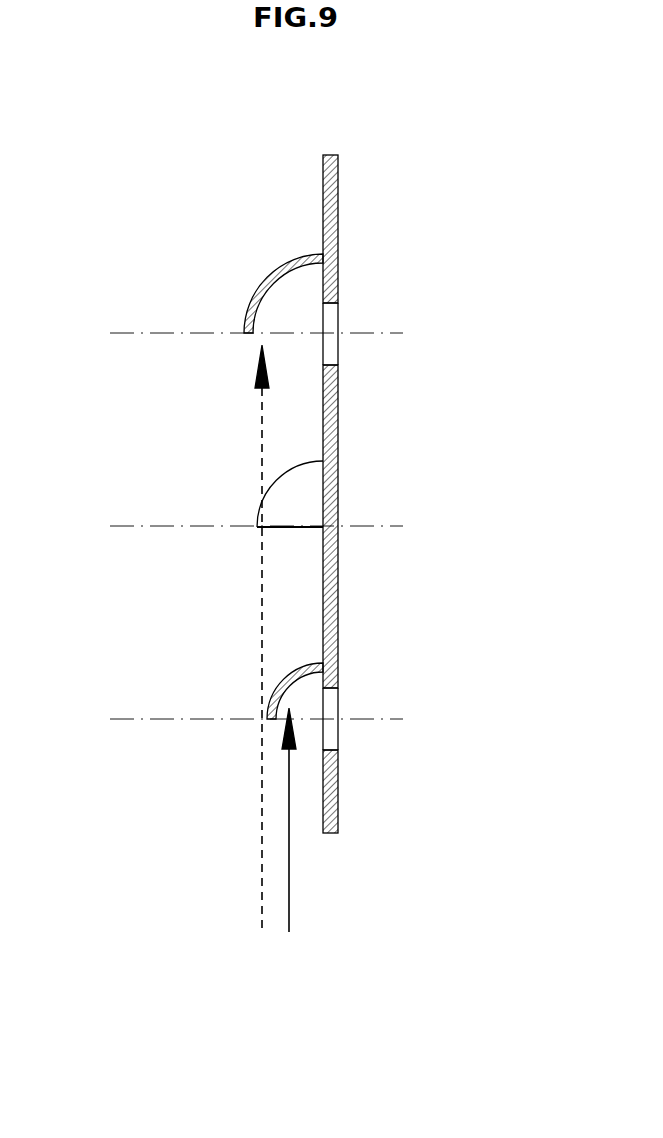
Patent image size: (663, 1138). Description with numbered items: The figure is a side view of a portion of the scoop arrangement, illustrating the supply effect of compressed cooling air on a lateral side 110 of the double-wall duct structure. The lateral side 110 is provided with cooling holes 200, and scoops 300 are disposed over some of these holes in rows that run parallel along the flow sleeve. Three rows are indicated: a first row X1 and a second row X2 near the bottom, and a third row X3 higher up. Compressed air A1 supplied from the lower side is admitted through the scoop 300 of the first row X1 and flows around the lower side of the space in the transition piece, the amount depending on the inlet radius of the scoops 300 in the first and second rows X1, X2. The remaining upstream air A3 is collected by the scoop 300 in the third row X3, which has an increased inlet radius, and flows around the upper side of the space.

The lateral side 110 is at (339, 209).
The cooling holes 200 is at (330, 347).
The scoops 300 is at (262, 283).
The first row X1 is at (241, 719).
The second row X2 is at (241, 527).
The third row X3 is at (241, 334).
The compressed air A1 is at (302, 820).
The compressed air A3 is at (249, 638).